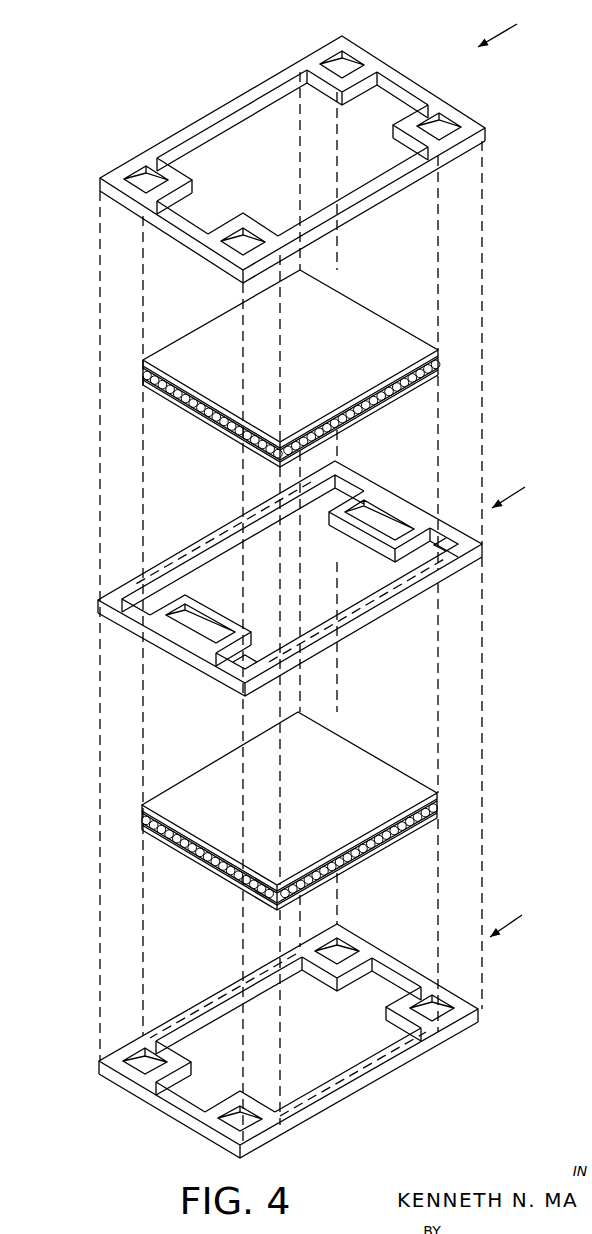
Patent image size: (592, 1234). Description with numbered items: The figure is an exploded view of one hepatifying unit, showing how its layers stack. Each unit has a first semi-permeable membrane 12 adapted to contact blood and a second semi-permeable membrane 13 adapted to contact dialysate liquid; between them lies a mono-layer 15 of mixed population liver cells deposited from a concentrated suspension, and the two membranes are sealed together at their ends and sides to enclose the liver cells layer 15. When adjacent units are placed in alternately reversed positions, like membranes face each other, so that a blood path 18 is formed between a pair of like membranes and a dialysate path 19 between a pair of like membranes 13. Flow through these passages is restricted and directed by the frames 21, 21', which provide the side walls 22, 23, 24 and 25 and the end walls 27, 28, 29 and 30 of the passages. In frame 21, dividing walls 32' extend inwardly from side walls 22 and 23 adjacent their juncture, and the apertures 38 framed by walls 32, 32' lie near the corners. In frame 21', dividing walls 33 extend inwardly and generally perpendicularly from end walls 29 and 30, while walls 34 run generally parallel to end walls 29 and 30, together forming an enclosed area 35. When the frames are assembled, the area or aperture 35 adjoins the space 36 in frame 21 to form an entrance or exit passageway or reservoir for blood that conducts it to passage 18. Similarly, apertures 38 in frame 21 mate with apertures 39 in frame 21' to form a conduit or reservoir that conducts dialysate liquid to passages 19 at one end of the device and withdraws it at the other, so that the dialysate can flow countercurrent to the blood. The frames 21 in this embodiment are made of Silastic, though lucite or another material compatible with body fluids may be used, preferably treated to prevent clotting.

The first semi-permeable membrane 12 is at (383, 332).
The second semi-permeable membrane 13 is at (360, 417).
The mono-layer of liver cells 15 is at (402, 385).
The blood path 18 is at (256, 171).
The dialysate path 19 is at (206, 588).
The frame 21 is at (514, 473).
The frame 21' is at (525, 490).
The side wall 22 is at (168, 135).
The side wall 23 is at (475, 147).
The side wall 24 is at (218, 527).
The side wall 25 is at (365, 628).
The end wall 27 is at (115, 208).
The end wall 28 is at (463, 110).
The end wall 29 is at (228, 650).
The end wall 30 is at (437, 515).
The wall 32 is at (320, 581).
The dividing wall 32' is at (291, 609).
The dividing wall 33 is at (358, 487).
The wall 34 is at (388, 542).
The enclosed area 35 is at (385, 520).
The space 36 is at (393, 110).
The aperture 38 is at (343, 68).
The aperture 39 is at (445, 548).